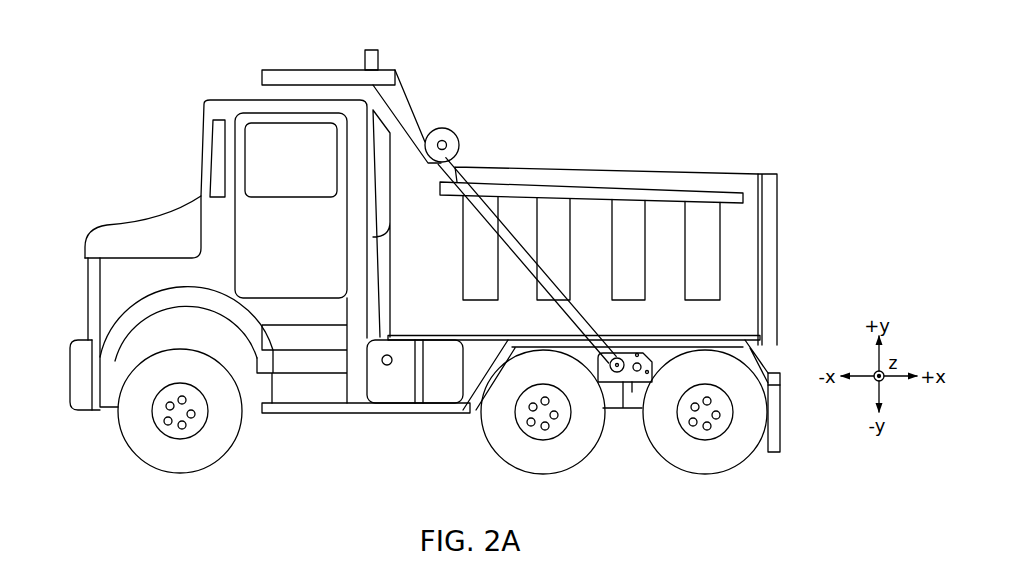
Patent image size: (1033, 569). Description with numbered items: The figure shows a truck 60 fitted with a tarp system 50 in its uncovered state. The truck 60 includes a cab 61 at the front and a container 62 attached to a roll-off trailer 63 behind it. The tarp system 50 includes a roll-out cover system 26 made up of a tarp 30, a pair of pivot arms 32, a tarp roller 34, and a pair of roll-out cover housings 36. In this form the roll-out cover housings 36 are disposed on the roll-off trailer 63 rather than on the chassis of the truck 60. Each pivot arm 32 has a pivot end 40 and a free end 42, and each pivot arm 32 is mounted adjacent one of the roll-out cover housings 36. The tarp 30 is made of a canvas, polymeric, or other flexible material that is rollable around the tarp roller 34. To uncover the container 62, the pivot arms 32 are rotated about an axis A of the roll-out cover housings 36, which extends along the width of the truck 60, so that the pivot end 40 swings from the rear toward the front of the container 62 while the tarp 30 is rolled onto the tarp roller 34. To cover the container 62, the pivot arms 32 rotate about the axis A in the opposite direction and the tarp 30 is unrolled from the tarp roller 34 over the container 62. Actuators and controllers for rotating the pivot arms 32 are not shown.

The truck 60 is at (148, 152).
The cab 61 is at (107, 225).
The free end 42 is at (440, 103).
The tarp 30 is at (451, 131).
The tarp roller 34 is at (447, 144).
The pivot arms 32 is at (485, 188).
The container 62 is at (712, 145).
The roll-out cover system 26 is at (708, 327).
The pivot end 40 is at (632, 352).
The tarp system 50 is at (588, 372).
The axis A is at (598, 356).
The roll-out cover housings 36 is at (620, 408).
The roll-off trailer 63 is at (632, 392).